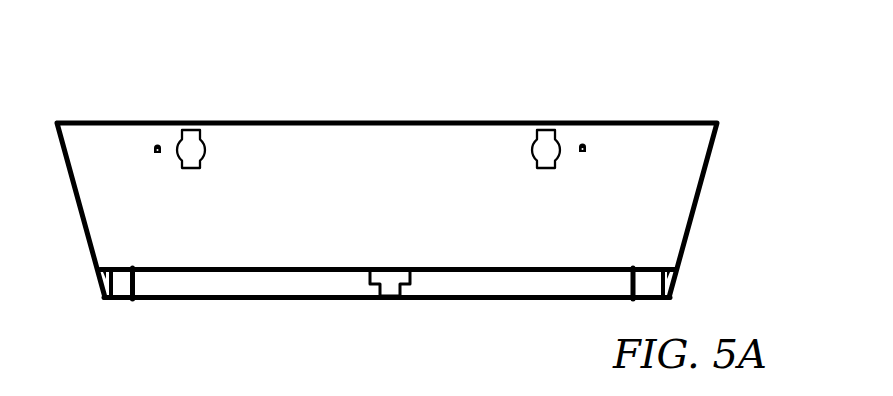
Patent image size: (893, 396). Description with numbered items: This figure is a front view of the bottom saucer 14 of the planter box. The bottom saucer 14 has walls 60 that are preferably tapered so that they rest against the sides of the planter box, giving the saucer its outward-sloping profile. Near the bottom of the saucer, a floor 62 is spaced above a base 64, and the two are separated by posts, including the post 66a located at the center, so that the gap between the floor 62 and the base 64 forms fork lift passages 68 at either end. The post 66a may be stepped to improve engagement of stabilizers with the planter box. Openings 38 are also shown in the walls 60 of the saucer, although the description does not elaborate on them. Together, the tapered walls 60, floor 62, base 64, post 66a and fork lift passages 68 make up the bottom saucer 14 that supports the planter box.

The bottom saucer 14 is at (306, 204).
The locking aperture 38 is at (190, 138).
The walls 60 is at (700, 188).
The floor 62 is at (452, 268).
The base 64 is at (283, 300).
The post 66a is at (388, 285).
The fork lift passages 68 is at (182, 283).